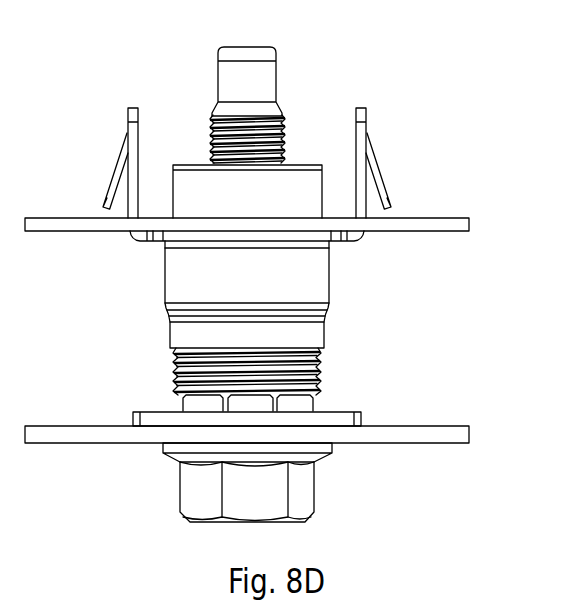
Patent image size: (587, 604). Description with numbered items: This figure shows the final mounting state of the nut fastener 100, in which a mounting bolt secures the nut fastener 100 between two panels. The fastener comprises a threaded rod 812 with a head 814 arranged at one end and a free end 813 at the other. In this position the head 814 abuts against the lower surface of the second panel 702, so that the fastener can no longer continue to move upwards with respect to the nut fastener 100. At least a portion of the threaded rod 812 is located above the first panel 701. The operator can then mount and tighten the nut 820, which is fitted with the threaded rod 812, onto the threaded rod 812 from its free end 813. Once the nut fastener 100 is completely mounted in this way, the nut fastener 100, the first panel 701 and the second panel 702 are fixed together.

The nut fastener 100 is at (312, 335).
The first panel 701 is at (457, 224).
The second panel 702 is at (462, 437).
The threaded rod 812 is at (282, 128).
The free end 813 is at (267, 77).
The head 814 is at (203, 488).
The nut 820 is at (193, 177).